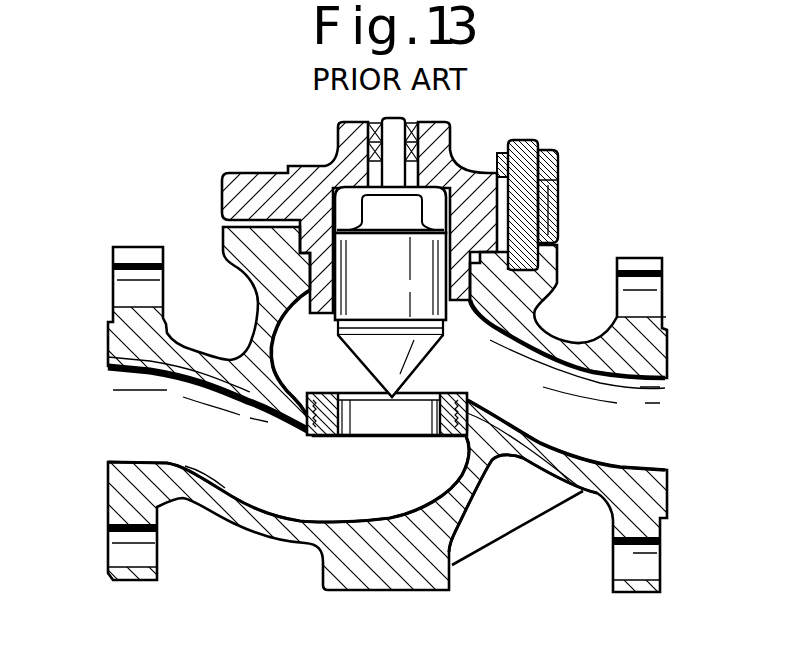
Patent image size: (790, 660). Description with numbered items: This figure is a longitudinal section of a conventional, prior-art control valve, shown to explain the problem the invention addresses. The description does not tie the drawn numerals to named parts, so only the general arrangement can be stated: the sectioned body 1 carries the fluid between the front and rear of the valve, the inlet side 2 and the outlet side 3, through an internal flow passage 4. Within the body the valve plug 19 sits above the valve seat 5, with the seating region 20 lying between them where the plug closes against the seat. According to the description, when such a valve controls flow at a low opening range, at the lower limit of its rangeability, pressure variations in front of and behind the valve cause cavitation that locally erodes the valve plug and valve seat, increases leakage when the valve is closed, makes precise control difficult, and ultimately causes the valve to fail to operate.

The valve body 1 is at (527, 314).
The inlet port 2 is at (130, 429).
The outlet port 3 is at (655, 417).
The inlet passage 4 is at (285, 408).
The seat ring 5 is at (426, 428).
The valve disc 19 is at (433, 352).
The valve seat 20 is at (440, 396).